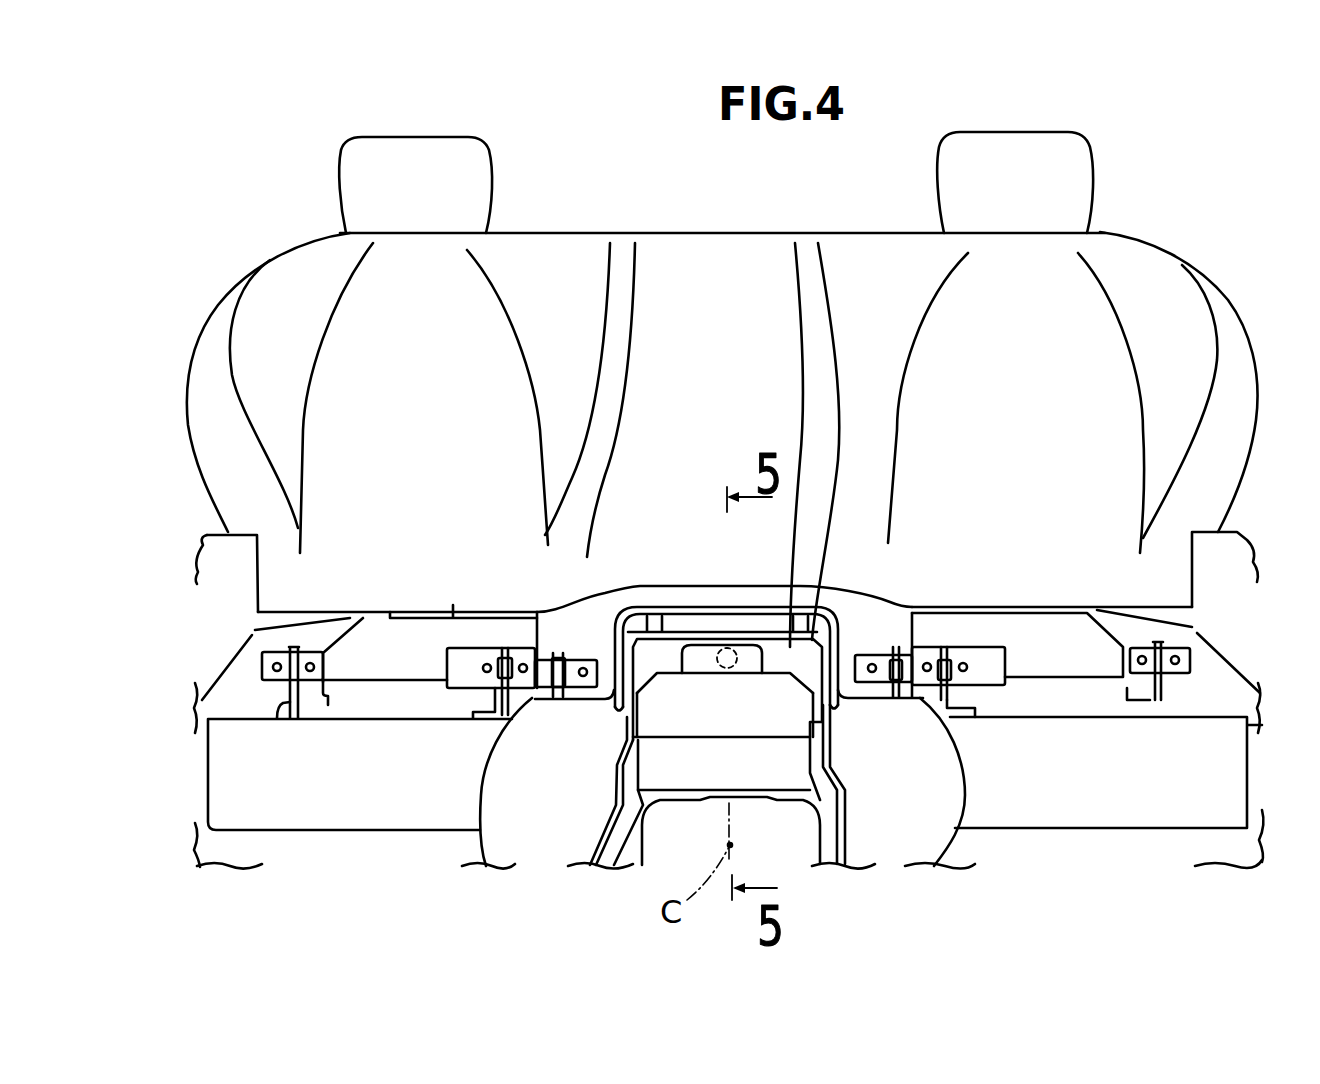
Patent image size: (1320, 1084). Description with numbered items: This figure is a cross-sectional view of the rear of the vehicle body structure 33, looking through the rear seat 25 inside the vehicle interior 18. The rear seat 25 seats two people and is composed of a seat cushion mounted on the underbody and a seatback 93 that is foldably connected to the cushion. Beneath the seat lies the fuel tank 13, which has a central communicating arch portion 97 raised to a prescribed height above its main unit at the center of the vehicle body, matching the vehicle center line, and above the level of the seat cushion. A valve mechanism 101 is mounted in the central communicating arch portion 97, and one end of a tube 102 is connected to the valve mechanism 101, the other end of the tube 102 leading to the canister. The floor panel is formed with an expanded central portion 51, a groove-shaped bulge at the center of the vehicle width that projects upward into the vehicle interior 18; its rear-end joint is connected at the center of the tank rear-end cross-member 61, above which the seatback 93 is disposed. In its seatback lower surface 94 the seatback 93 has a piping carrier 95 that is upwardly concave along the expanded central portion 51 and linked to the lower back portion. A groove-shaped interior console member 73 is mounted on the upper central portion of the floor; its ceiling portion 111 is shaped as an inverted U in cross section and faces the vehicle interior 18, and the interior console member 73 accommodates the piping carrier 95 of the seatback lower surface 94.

The vehicle interior 18 is at (152, 280).
The rear seat 25 is at (283, 214).
The seatback 93 is at (565, 233).
The vehicle body structure 33 is at (713, 600).
The fuel tank 13 is at (655, 668).
The seatback lower surface 94 is at (634, 573).
The piping carrier 95 is at (745, 590).
The expanded central portion 51 is at (763, 660).
The central communicating arch portion 97 is at (803, 575).
The tank rear-end cross-member 61 is at (453, 613).
The interior console member 73 is at (578, 611).
The ceiling portion 111 is at (683, 643).
The valve mechanism 101 is at (747, 670).
The tube 102 is at (712, 648).